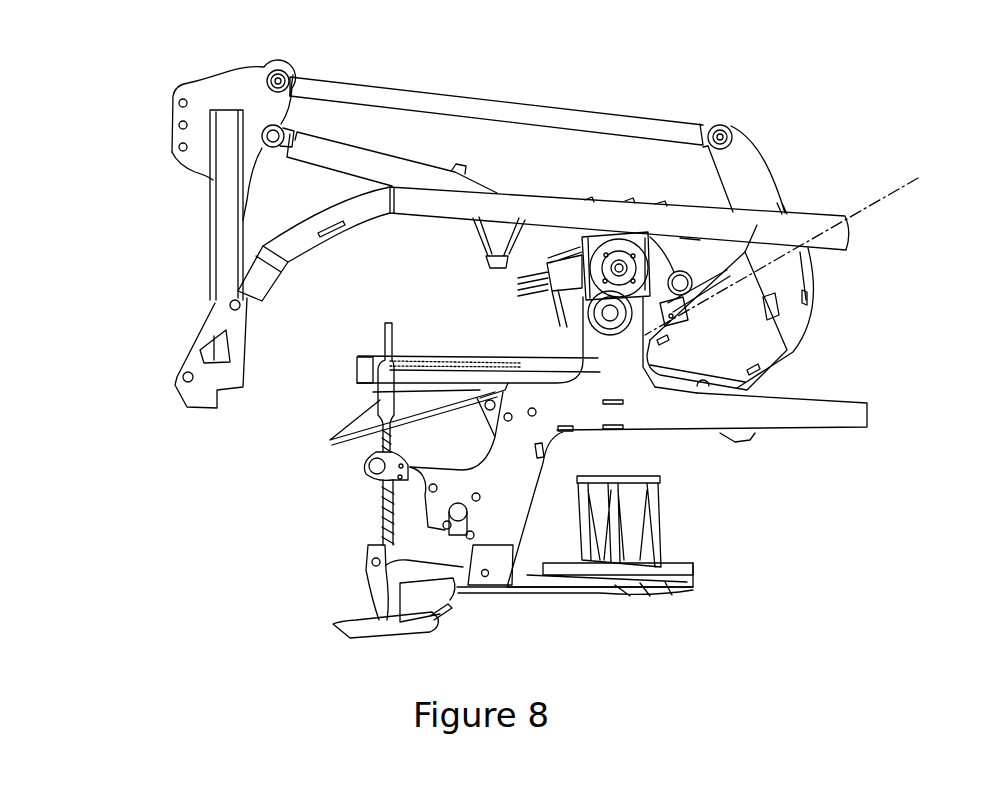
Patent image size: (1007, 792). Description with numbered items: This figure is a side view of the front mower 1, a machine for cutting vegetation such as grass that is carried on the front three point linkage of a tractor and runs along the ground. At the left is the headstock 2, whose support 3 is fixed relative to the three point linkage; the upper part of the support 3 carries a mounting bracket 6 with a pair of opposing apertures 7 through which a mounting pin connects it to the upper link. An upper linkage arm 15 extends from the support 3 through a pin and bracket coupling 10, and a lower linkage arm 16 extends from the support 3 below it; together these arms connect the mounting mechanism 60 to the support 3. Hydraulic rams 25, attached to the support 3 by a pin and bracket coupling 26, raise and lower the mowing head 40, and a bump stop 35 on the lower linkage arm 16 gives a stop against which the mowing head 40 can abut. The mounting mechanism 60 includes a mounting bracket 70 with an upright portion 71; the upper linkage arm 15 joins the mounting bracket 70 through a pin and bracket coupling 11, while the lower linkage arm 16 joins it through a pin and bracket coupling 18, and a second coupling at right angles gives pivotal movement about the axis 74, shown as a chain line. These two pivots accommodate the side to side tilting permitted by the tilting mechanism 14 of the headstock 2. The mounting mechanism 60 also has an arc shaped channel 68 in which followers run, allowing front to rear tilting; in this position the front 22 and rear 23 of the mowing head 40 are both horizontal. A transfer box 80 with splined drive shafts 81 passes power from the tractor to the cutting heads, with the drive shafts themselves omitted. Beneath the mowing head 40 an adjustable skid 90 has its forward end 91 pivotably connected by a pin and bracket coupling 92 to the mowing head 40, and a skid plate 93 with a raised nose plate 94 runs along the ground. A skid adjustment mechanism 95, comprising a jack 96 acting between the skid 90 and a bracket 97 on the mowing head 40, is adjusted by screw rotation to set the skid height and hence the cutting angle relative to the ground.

The front mower 1 is at (134, 289).
The headstock 2 is at (760, 136).
The support 3 is at (210, 237).
The mounting bracket 6 is at (207, 89).
The opposing apertures 7 is at (172, 123).
The pin and bracket coupling 10 is at (292, 64).
The pin and bracket coupling 11 is at (725, 119).
The tilting mechanism 14 is at (578, 99).
The upper linkage arm 15 is at (473, 105).
The lower linkage arm 16 is at (487, 203).
The pin and bracket coupling 18 is at (674, 271).
The front of mowing head 22 is at (862, 393).
The rear of mowing head 23 is at (343, 364).
The hydraulic rams 25 is at (343, 152).
The pin and bracket coupling 26 is at (263, 150).
The bump stop 35 is at (470, 245).
The mowing head 40 is at (846, 325).
The mounting mechanism 60 is at (829, 270).
The arc shaped channel 68 is at (681, 375).
The mounting bracket 70 is at (731, 341).
The upright portion 71 is at (753, 170).
The axis 74 is at (877, 200).
The transfer box 80 is at (573, 247).
The splined drive shaft 81 is at (526, 298).
The adjustable skid 90 is at (365, 585).
The forward end of the skid 91 is at (450, 580).
The pin and bracket coupling 92 is at (487, 578).
The skid plate 93 is at (352, 636).
The raised nose plate 94 is at (442, 622).
The skid adjustment mechanism 95 is at (329, 481).
The jack 96 is at (377, 402).
The bracket 97 is at (363, 455).